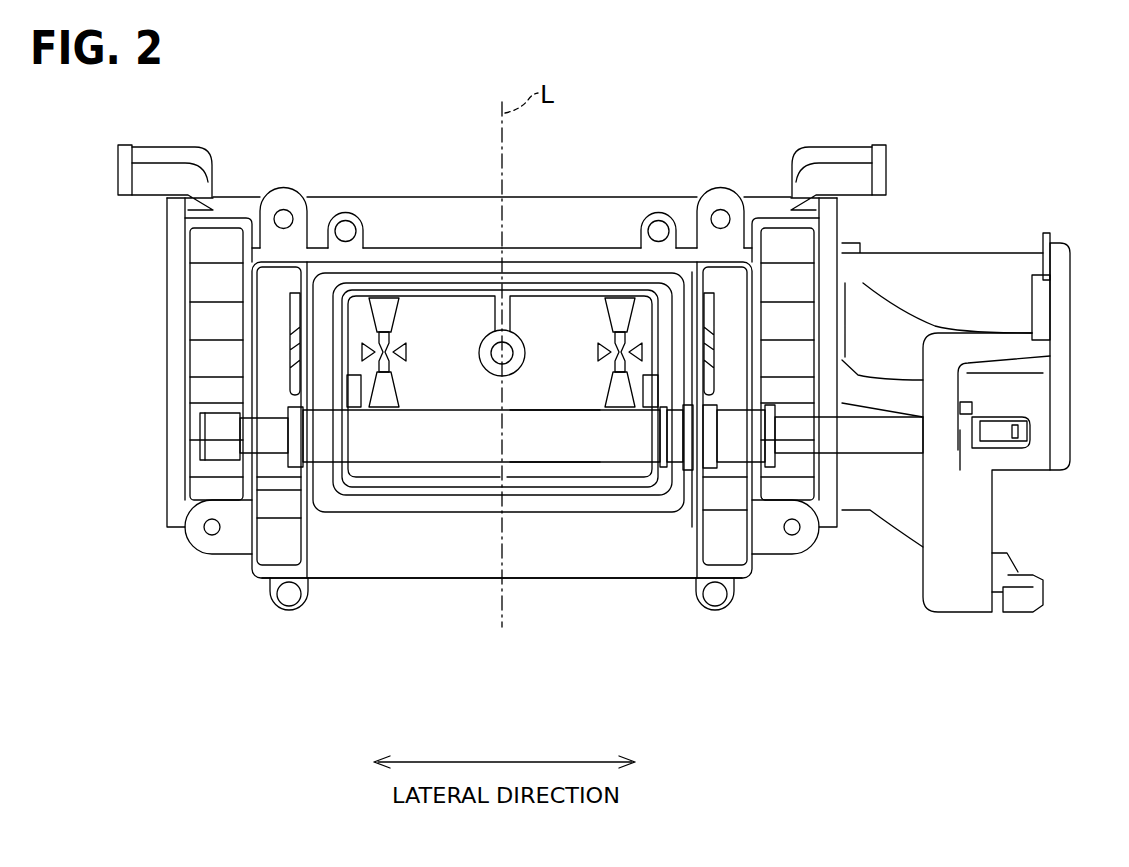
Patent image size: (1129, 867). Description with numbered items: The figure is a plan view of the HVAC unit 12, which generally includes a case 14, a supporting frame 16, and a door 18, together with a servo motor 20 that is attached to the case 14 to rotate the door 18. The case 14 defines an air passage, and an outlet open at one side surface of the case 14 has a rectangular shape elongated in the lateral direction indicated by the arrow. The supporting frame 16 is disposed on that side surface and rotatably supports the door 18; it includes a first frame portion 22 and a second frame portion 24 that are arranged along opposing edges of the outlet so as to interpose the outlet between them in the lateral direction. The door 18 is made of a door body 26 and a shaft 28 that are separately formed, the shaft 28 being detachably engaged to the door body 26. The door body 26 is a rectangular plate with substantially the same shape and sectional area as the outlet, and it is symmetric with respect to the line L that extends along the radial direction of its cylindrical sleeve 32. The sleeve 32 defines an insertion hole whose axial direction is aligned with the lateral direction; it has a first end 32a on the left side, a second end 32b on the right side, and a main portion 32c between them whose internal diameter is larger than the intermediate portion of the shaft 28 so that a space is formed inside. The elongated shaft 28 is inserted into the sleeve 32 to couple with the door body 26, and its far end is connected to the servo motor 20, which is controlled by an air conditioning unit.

The HVAC unit 12 is at (861, 100).
The case 14 is at (602, 222).
The supporting frame 16 is at (383, 680).
The door 18 is at (442, 307).
The servo motor 20 is at (972, 522).
The first frame portion 22 is at (280, 547).
The second frame portion 24 is at (717, 596).
The door body 26 is at (553, 308).
The shaft 28 is at (882, 445).
The sleeve 32 is at (418, 422).
The first end 32a is at (295, 447).
The second end 32b is at (710, 447).
The main portion 32c is at (582, 452).